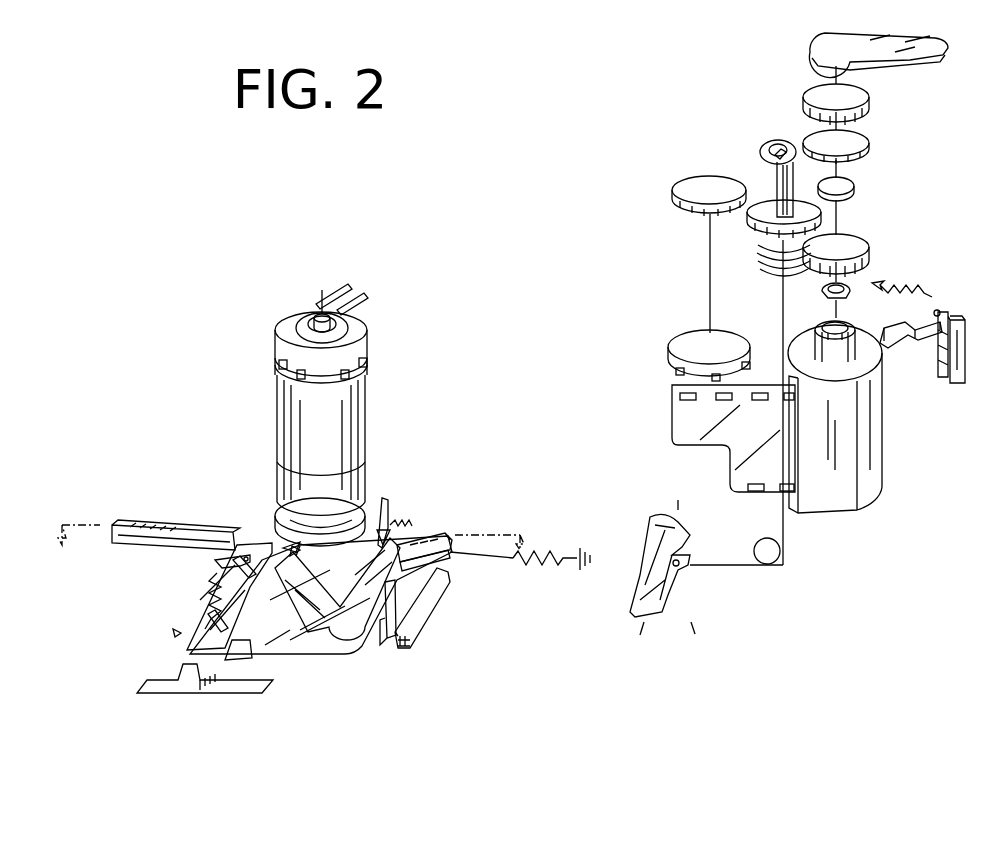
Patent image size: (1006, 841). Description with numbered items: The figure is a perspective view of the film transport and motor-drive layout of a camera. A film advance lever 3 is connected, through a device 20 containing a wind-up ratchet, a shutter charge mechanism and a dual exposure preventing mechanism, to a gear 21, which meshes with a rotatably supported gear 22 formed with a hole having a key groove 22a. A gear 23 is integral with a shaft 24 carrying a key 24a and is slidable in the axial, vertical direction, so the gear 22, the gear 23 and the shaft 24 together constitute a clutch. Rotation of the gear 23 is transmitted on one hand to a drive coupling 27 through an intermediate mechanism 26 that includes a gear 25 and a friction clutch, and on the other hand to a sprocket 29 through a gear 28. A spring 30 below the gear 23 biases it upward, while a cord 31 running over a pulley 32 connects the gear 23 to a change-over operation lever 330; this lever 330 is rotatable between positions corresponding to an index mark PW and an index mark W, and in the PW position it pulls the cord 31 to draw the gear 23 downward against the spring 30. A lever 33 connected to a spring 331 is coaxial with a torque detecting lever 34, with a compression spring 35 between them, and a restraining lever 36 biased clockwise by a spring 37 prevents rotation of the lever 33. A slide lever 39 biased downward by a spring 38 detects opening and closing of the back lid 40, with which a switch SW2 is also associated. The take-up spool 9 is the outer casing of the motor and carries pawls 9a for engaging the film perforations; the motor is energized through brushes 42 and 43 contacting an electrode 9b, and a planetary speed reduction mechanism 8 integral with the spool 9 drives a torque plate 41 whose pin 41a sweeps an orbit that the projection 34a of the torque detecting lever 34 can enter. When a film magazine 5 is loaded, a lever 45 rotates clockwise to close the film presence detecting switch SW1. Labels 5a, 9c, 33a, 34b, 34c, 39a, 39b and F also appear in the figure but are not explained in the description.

The film advance lever 3 is at (940, 52).
The film magazine 5 is at (868, 468).
The bearing boss 5a is at (835, 355).
The speed reduction mechanism 8 is at (282, 466).
The take-up spool 9 is at (283, 398).
The pawls 9a is at (280, 364).
The electrode 9b is at (350, 330).
The motor shaft 9c is at (318, 318).
The device 20 is at (860, 100).
The gear 21 is at (862, 146).
The gear 22 is at (772, 142).
The key groove 22a is at (770, 148).
The gear 23 is at (760, 228).
The shaft 24 is at (775, 178).
The key 24a is at (792, 128).
The gear 25 is at (852, 188).
The intermediate mechanism 26 is at (850, 240).
The drive coupling 27 is at (848, 290).
The gear 28 is at (695, 183).
The sprocket 29 is at (690, 340).
The spring 30 is at (752, 255).
The cord 31 is at (782, 318).
The pulley 32 is at (762, 545).
The lever 33 is at (312, 655).
The contact tab 33a is at (425, 560).
The torque detecting lever 34 is at (325, 620).
The projection 34a is at (392, 510).
The lever arm 34b is at (325, 563).
The lever tab 34c is at (390, 640).
The compression spring 35 is at (282, 546).
The restraining lever 36 is at (428, 542).
The spring 37 is at (402, 522).
The spring 38 is at (195, 593).
The slide lever 39 is at (178, 632).
The slide plate tab 39a is at (250, 642).
The slide plate arm 39b is at (215, 562).
The back lid 40 is at (186, 692).
The torque plate 41 is at (280, 505).
The pin 41a is at (352, 521).
The brush 42 is at (340, 290).
The brush 43 is at (356, 298).
The lever 45 is at (937, 306).
The change-over operation lever 330 is at (640, 598).
The spring 331 is at (535, 575).
The frame plate F is at (700, 445).
The index mark PW is at (635, 644).
The index mark W is at (696, 644).
The film presence detecting switch SW1 is at (957, 385).
The switch SW2 is at (408, 658).